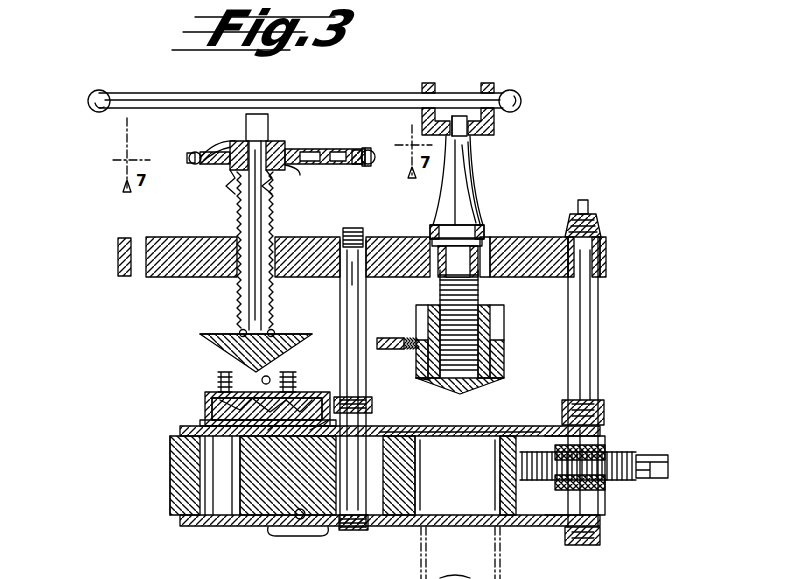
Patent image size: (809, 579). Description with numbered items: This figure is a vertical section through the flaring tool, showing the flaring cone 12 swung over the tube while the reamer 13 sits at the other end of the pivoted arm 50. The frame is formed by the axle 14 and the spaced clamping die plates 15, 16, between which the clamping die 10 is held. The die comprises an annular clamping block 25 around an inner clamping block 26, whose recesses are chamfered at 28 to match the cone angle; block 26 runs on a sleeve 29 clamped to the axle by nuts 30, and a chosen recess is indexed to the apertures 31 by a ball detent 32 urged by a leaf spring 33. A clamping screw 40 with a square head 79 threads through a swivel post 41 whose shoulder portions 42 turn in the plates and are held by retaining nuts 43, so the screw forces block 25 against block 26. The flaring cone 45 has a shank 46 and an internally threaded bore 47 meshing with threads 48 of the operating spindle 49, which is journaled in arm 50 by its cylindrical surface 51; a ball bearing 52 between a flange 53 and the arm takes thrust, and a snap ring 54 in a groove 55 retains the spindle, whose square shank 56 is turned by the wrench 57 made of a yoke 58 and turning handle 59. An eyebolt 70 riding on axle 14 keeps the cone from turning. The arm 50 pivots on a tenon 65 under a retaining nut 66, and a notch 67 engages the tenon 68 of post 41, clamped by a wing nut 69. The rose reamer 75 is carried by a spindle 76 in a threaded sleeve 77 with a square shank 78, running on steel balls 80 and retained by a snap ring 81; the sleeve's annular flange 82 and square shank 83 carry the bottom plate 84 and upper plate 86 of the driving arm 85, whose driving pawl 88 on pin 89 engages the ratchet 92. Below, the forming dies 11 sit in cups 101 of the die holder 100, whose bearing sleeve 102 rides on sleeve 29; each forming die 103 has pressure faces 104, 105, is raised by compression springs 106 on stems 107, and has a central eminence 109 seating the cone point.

The clamping die 10 is at (165, 490).
The forming dies 11 is at (200, 396).
The flaring cone 12 is at (512, 354).
The reamer 13 is at (196, 336).
The axle 14 is at (357, 312).
The clamping die plate 15 is at (182, 520).
The clamping die plate 16 is at (182, 430).
The annular clamping block 25 is at (184, 460).
The inner clamping block 26 is at (258, 485).
The chamfer 28 is at (485, 438).
The sleeve 29 is at (398, 468).
The nuts 30 is at (374, 406).
The apertures 31 is at (452, 424).
The ball detent 32 is at (299, 522).
The leaf spring 33 is at (274, 530).
The clamping screw 40 is at (618, 455).
The swivel post 41 is at (585, 363).
The shoulder portions 42 is at (604, 437).
The retaining nuts 43 is at (600, 408).
The flaring cone 45 is at (506, 336).
The shank 46 is at (488, 310).
The internally threaded bore 47 is at (480, 386).
The threads 48 is at (440, 292).
The operating spindle 49 is at (470, 185).
The pivoted arm 50 is at (522, 240).
The machined cylindrical surface 51 is at (432, 242).
The ball bearing 52 is at (488, 240).
The flange 53 is at (478, 278).
The snap ring 54 is at (436, 228).
The groove 55 is at (468, 222).
The square shank 56 is at (458, 140).
The wrench 57 is at (418, 90).
The yoke 58 is at (488, 84).
The turning handle 59 is at (135, 106).
The tenon 65 is at (352, 272).
The retaining nut 66 is at (346, 236).
The notch 67 is at (137, 275).
The tenon 68 is at (588, 262).
The wing nut 69 is at (596, 225).
The eyebolt 70 is at (396, 350).
The rose reamer 75 is at (218, 346).
The spindle 76 is at (254, 296).
The threaded sleeve 77 is at (234, 210).
The square shank 78 is at (247, 124).
The square head 79 is at (660, 462).
The steel balls 80 is at (240, 333).
The snap ring 81 is at (278, 142).
The annular flange 82 is at (283, 166).
The square shank 83 is at (300, 150).
The bottom plate 84 is at (330, 164).
The driving arm 85 is at (370, 148).
The upper plate 86 is at (215, 143).
The driving pawl 88 is at (362, 154).
The pin 89 is at (360, 162).
The ratchet 92 is at (232, 163).
The die holder 100 is at (200, 422).
The cups 101 is at (206, 400).
The bearing sleeve 102 is at (325, 440).
The forming die 103 is at (226, 396).
The pressure face 104 is at (262, 432).
The pressure face 105 is at (305, 432).
The compression springs 106 is at (298, 378).
The stems 107 is at (216, 378).
The central eminence 109 is at (272, 378).